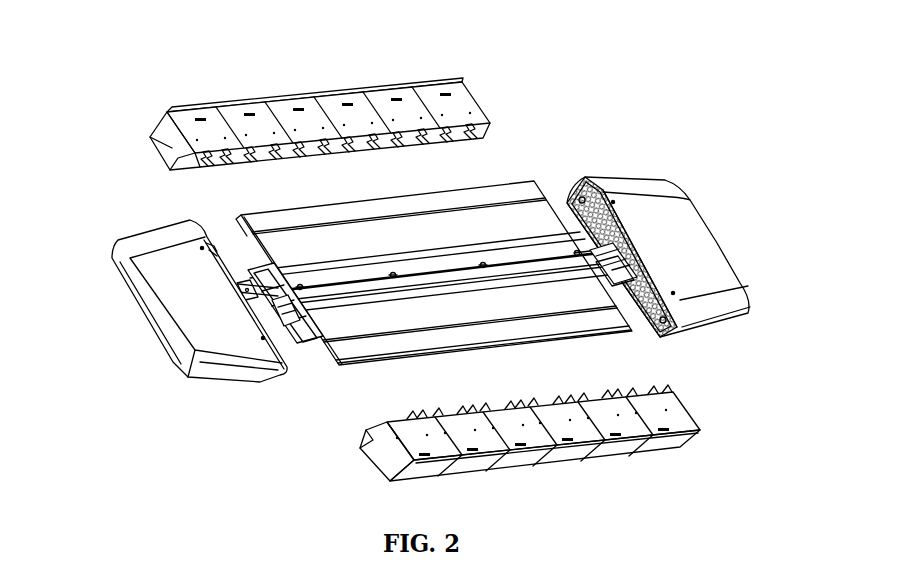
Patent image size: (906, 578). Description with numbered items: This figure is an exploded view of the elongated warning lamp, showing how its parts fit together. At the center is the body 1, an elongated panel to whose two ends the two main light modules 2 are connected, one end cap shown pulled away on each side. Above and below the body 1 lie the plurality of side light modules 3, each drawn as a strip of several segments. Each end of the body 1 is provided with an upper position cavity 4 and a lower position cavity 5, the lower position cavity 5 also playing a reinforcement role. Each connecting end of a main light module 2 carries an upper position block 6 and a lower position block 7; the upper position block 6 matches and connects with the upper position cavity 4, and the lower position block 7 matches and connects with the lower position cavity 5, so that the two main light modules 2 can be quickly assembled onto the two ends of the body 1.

The body 1 is at (434, 199).
The main light module 2 is at (404, 231).
The side light module 3 is at (466, 266).
The upper position cavity 4 is at (226, 245).
The lower position cavity 5 is at (318, 362).
The upper position block 6 is at (670, 209).
The lower position block 7 is at (694, 245).